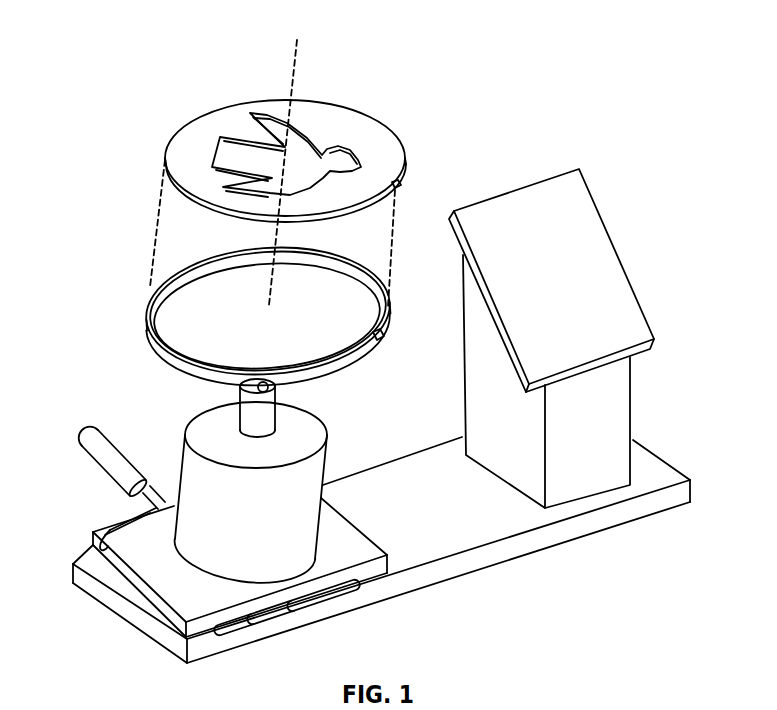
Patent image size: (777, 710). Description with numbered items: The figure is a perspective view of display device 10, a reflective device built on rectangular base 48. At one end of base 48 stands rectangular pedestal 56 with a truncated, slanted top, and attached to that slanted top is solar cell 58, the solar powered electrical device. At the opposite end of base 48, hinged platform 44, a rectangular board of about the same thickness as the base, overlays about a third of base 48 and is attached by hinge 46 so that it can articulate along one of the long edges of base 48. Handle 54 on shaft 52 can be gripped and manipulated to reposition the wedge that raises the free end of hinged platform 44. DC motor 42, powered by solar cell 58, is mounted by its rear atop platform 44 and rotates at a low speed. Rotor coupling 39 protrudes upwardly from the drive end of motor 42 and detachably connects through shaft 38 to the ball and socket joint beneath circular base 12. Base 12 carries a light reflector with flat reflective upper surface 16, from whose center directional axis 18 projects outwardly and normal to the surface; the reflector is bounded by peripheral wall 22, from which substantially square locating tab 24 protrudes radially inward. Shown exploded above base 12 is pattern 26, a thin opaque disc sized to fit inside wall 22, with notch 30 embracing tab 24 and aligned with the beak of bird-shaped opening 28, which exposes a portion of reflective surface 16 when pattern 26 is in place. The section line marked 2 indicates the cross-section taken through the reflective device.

The display device 10 is at (141, 48).
The circular base 12 is at (257, 331).
The reflective upper surface 16 is at (188, 308).
The directional axis 18 is at (303, 54).
The peripheral wall 22 is at (173, 350).
The locating tab 24 is at (380, 332).
The pattern 26 is at (286, 122).
The opening 28 is at (280, 118).
The notch 30 is at (398, 186).
The shaft 38 is at (272, 387).
The rotor coupling 39 is at (248, 410).
The DC motor 42 is at (305, 508).
The hinged platform 44 is at (362, 545).
The hinge 46 is at (347, 591).
The rectangular base 48 is at (148, 628).
The shaft 52 is at (100, 545).
The handle 54 is at (117, 482).
The pedestal 56 is at (615, 402).
The solar cell 58 is at (620, 278).
The section line 2- 2 is at (142, 293).